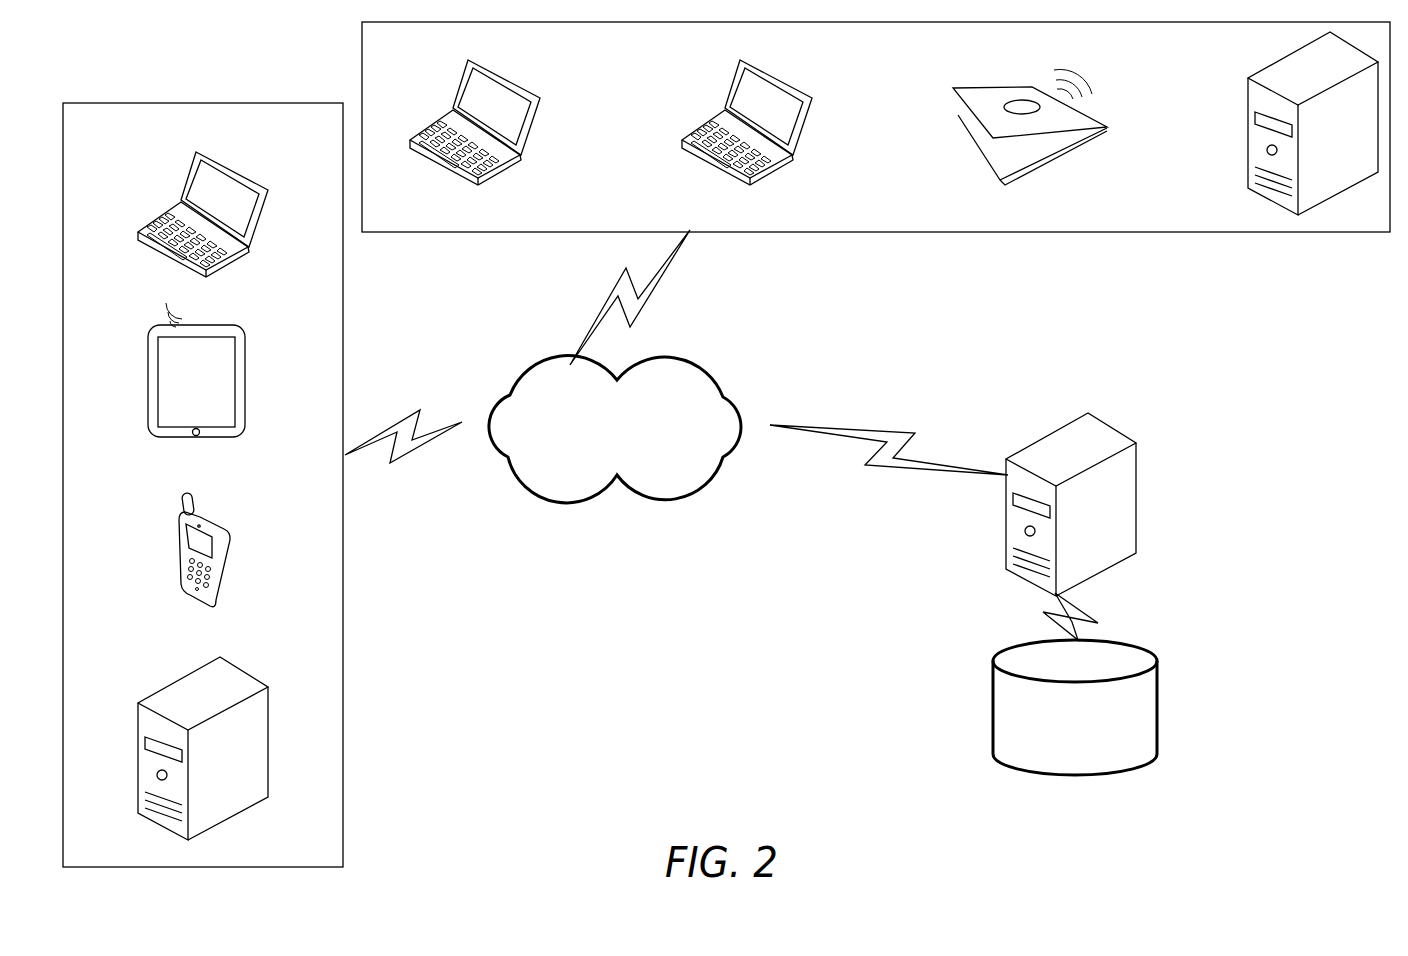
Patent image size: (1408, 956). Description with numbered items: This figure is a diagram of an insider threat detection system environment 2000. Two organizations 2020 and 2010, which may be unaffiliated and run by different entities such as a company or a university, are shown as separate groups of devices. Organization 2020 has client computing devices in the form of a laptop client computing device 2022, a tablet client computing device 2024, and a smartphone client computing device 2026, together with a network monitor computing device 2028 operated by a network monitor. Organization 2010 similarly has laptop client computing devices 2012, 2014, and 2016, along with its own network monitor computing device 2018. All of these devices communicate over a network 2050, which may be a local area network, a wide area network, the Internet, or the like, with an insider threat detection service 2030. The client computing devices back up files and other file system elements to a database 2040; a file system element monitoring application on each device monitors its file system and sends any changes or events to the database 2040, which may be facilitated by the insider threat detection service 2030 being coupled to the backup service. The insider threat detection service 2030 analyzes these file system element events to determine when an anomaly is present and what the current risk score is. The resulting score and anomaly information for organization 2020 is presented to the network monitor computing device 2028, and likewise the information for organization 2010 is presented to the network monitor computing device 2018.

The insider threat detection system environment 2000 is at (1231, 796).
The organization 2010 is at (362, 38).
The laptop client computing device 2012 is at (469, 60).
The laptop client computing device 2014 is at (741, 60).
The laptop client computing device 2016 is at (1087, 117).
The network monitor computing device 2018 is at (1282, 58).
The organization 2020 is at (92, 103).
The laptop client computing device 2022 is at (200, 153).
The tablet client computing device 2024 is at (222, 325).
The smartphone client computing device 2026 is at (206, 512).
The network monitor computing device 2028 is at (243, 810).
The insider threat detection service 2030 is at (1088, 413).
The database 2040 is at (1149, 651).
The network 2050 is at (660, 367).